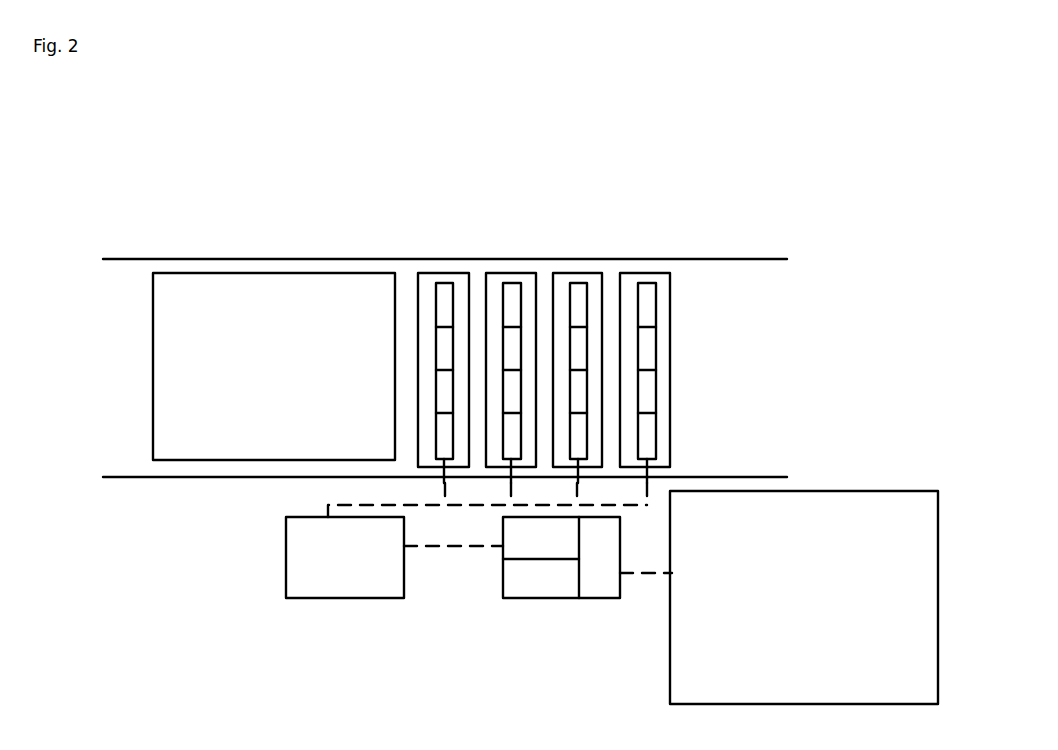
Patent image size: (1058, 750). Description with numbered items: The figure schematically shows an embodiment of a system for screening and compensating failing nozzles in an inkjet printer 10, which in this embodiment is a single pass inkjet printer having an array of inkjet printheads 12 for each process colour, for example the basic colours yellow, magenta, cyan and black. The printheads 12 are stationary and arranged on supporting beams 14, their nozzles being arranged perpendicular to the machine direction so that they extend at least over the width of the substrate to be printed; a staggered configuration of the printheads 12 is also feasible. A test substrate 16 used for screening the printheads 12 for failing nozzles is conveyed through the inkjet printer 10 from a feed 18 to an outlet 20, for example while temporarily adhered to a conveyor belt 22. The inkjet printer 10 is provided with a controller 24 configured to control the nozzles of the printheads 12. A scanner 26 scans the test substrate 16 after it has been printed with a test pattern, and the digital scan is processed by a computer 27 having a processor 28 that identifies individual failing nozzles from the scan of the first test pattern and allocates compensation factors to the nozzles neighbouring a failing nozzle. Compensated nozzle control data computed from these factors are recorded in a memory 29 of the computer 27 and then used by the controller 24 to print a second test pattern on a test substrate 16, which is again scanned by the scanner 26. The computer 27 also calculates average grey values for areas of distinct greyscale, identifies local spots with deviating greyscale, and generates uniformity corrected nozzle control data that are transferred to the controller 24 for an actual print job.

The inkjet printer 10 is at (774, 225).
The inkjet printheads 12 is at (648, 447).
The supporting beams 14 is at (665, 282).
The test substrate 16 is at (268, 302).
The feed 18 is at (108, 322).
The outlet 20 is at (805, 374).
The conveyor belt 22 is at (153, 480).
The controller 24 is at (357, 563).
The scanner 26 is at (887, 548).
The computer 27 is at (527, 599).
The processor 28 is at (603, 585).
The memory 29 is at (518, 539).